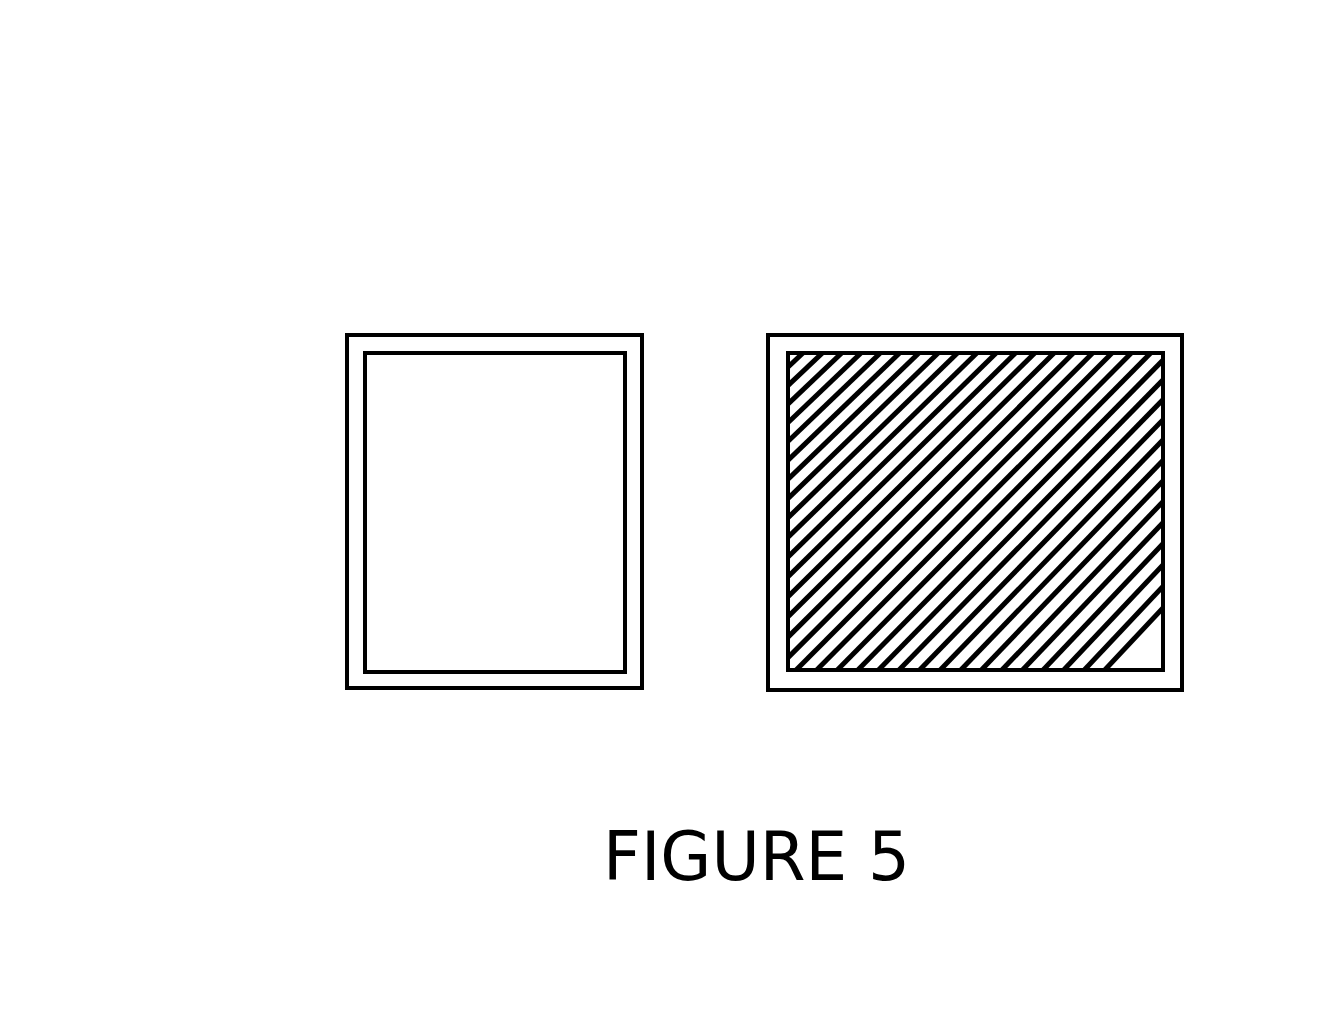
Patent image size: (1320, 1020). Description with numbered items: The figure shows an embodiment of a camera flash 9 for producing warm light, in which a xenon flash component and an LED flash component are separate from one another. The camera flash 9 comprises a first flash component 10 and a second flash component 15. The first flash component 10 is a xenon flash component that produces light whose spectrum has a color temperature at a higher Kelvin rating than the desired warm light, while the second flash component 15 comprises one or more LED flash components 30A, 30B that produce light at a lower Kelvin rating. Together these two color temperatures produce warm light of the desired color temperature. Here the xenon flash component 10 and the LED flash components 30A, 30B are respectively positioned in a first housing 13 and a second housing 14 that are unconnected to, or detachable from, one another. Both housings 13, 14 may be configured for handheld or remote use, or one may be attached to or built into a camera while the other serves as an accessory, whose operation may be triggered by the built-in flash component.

The camera flash 9 is at (691, 212).
The first flash component 10 is at (486, 310).
The first housing 13 is at (347, 563).
The second housing 14 is at (1182, 582).
The second flash component 15 is at (1097, 310).
The LED flash component 30A is at (917, 417).
The LED flash component 30B is at (1162, 487).